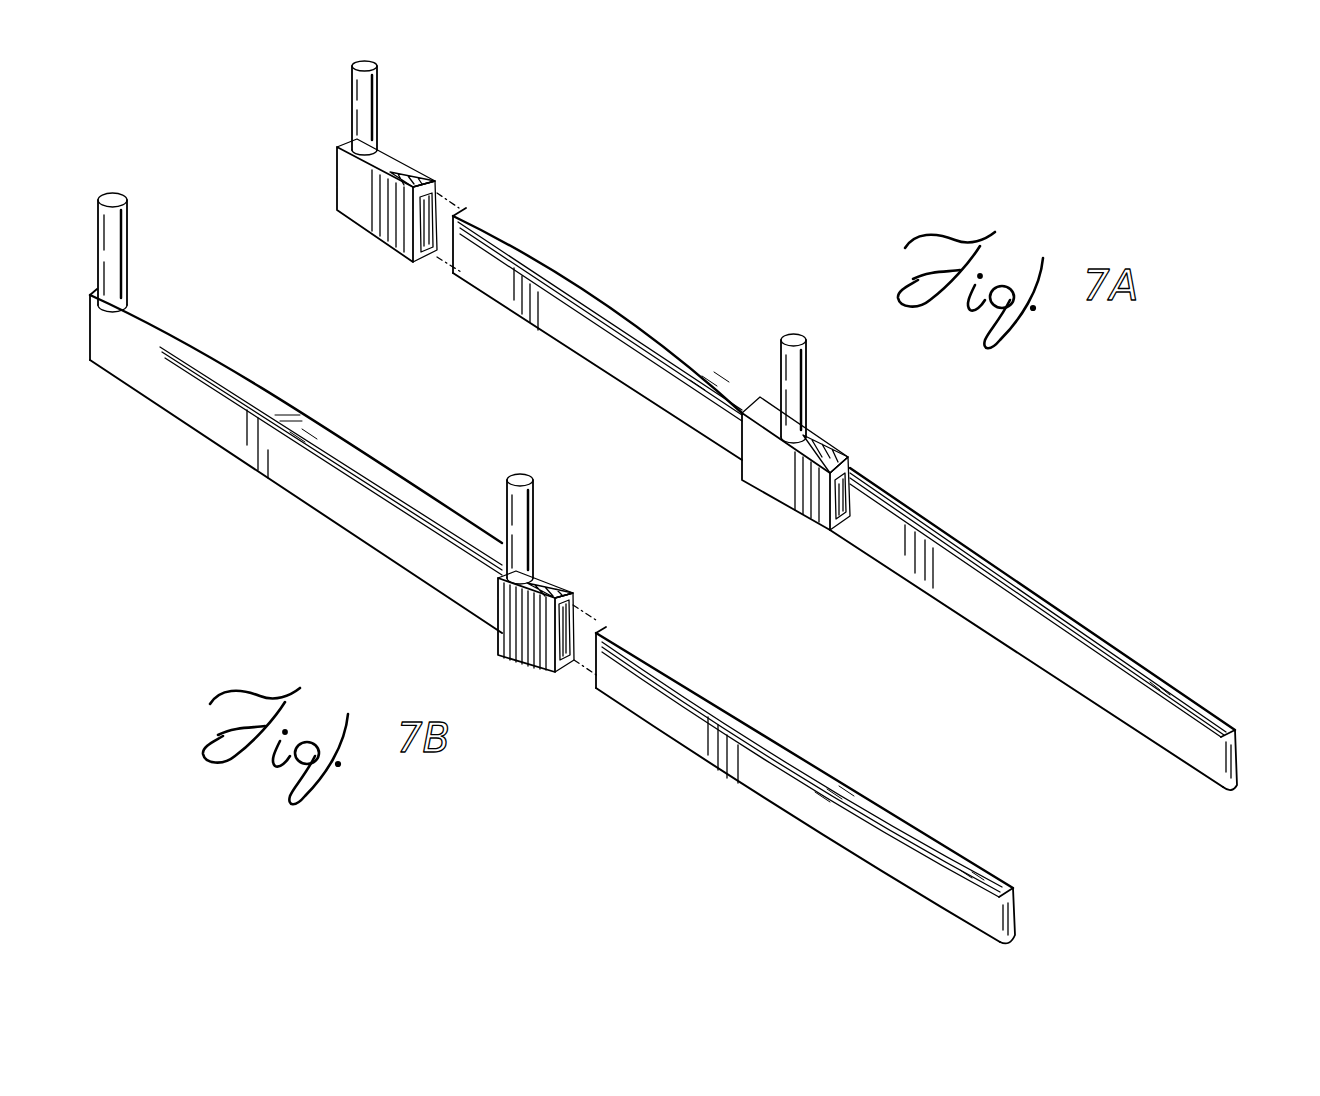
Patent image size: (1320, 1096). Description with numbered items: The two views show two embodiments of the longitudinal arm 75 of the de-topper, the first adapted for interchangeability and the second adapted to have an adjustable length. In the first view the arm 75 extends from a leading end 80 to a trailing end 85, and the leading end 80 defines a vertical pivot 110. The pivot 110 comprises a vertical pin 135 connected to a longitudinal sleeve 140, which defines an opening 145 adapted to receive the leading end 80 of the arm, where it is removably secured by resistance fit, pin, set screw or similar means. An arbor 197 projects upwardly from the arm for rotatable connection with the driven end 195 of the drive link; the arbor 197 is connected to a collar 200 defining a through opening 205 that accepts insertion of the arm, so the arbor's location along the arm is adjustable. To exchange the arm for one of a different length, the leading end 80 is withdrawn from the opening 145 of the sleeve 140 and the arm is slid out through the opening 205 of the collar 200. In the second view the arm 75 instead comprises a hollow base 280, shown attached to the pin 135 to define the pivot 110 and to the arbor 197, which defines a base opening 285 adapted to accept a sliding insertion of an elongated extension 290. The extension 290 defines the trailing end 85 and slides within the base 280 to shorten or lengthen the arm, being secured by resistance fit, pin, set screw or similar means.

In FIG. 7A, the longitudinal arm 75 is at (865, 499).
In FIG. 7B, the longitudinal arm 75 is at (842, 777).
In FIG. 7A, the leading end 80 is at (557, 282).
In FIG. 7A, the trailing end 85 is at (1218, 730).
In FIG. 7B, the trailing end 85 is at (1012, 893).
In FIG. 7A, the vertical pivot 110 is at (425, 180).
In FIG. 7B, the vertical pivot 110 is at (353, 472).
In FIG. 7A, the vertical pin 135 is at (372, 82).
In FIG. 7B, the vertical pin 135 is at (117, 222).
In FIG. 7A, the longitudinal sleeve 140 is at (392, 165).
In FIG. 7A, the opening 145 is at (430, 253).
In FIG. 7A, the driven end 195 is at (797, 358).
In FIG. 7B, the arbor 197 is at (523, 500).
In FIG. 7A, the collar 200 is at (817, 445).
In FIG. 7A, the through opening 205 is at (840, 507).
In FIG. 7B, the hollow base 280 is at (368, 470).
In FIG. 7B, the base opening 285 is at (568, 665).
In FIG. 7B, the elongated extension 290 is at (800, 763).